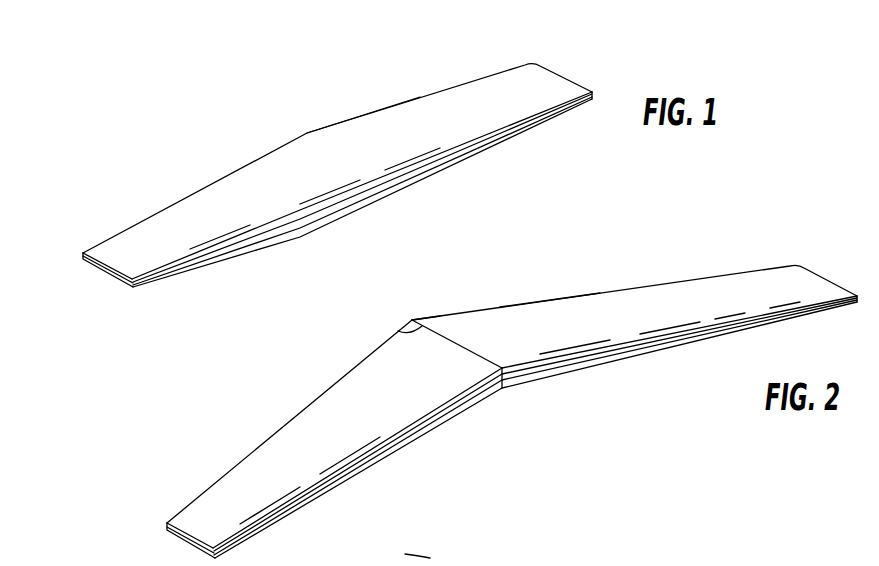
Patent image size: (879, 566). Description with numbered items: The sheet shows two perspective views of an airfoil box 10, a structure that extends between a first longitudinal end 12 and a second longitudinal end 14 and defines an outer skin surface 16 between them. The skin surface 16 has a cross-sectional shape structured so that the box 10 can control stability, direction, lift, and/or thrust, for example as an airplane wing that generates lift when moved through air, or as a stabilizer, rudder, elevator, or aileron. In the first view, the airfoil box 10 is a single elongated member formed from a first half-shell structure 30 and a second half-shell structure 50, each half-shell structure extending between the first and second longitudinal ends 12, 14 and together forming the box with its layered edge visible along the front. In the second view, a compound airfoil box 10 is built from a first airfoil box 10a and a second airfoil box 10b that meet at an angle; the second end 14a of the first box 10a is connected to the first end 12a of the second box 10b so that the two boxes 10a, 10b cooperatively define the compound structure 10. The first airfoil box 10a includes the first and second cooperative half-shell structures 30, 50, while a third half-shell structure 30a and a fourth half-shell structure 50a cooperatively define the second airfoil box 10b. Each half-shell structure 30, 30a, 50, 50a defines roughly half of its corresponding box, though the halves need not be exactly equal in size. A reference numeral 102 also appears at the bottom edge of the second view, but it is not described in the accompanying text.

In FIG. 1, the airfoil box 10 is at (240, 124).
In FIG. 2, the airfoil box 10 is at (245, 416).
In FIG. 2, the first airfoil box 10a is at (634, 306).
In FIG. 2, the second airfoil box 10b is at (303, 443).
In FIG. 1, the first longitudinal end 12 is at (560, 70).
In FIG. 2, the first longitudinal end 12 is at (828, 280).
In FIG. 2, the first end of the second box 12a is at (451, 335).
In FIG. 1, the second longitudinal end 14 is at (105, 270).
In FIG. 2, the second longitudinal end 14 is at (192, 543).
In FIG. 2, the second end of the first box 14a is at (398, 331).
In FIG. 1, the outer skin surface 16 is at (355, 132).
In FIG. 2, the outer skin surface 16 is at (551, 300).
In FIG. 1, the first half-shell structure 30 is at (198, 197).
In FIG. 2, the first half-shell structure 30 is at (647, 287).
In FIG. 2, the third half-shell structure 30a is at (300, 412).
In FIG. 1, the second half-shell structure 50 is at (183, 272).
In FIG. 2, the second half-shell structure 50 is at (630, 358).
In FIG. 2, the fourth half-shell structure 50a is at (370, 467).
In FIG. 2, the substrate 102 is at (435, 555).